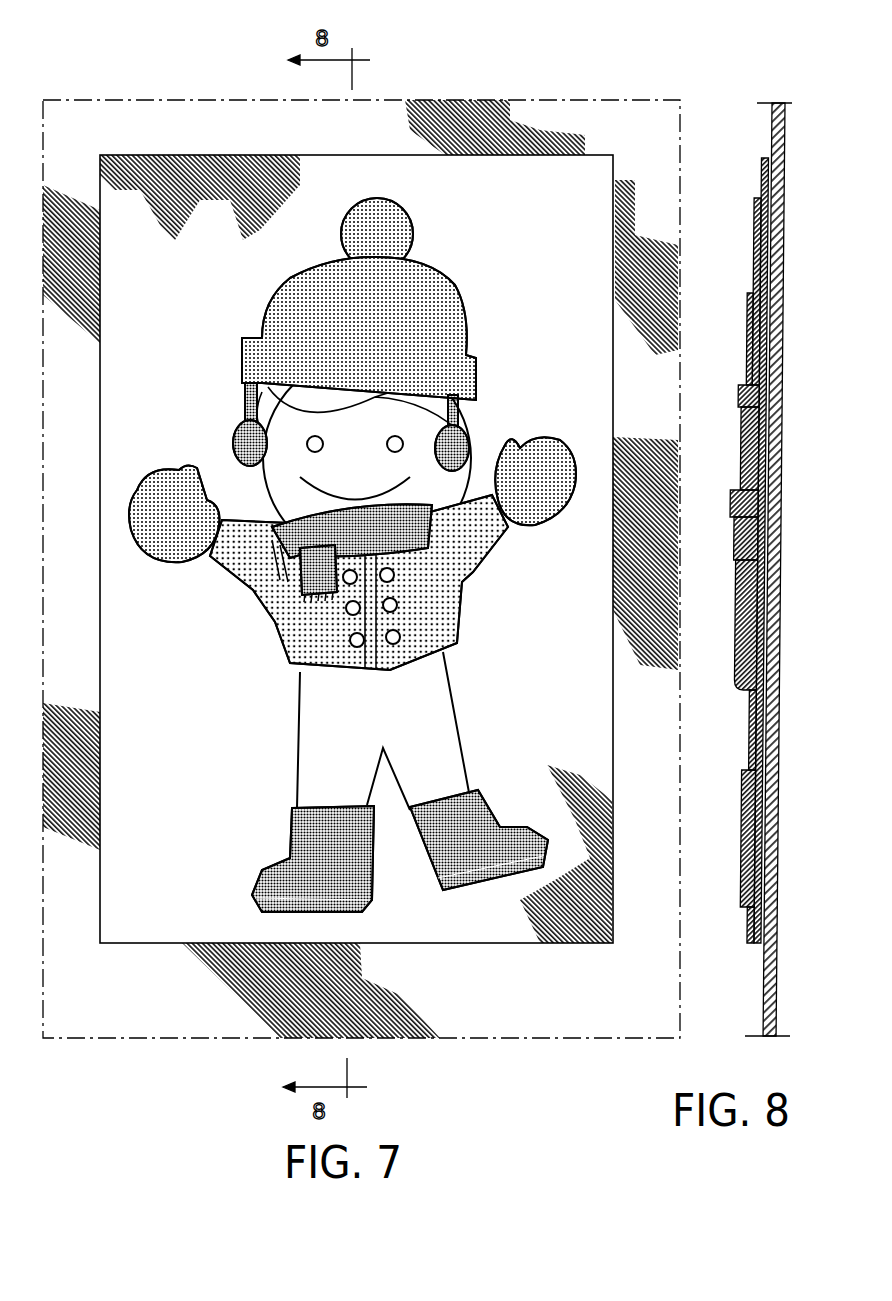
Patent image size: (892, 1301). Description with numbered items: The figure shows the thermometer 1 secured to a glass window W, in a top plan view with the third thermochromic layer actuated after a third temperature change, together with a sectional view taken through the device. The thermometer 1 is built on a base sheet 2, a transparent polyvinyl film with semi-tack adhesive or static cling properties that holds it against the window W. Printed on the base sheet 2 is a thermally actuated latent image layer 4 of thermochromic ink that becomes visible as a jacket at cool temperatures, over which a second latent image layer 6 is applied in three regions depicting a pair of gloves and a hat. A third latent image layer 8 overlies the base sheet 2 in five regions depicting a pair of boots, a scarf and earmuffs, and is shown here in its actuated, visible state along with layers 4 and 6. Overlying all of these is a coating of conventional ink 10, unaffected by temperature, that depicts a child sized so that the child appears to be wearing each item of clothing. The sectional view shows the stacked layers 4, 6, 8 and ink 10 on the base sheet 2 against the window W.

In FIG. 7, the decorative display assembly 1 is at (94, 66).
In FIG. 8, the decorative display assembly 1 is at (725, 70).
In FIG. 7, the base sheet 2 is at (513, 192).
In FIG. 8, the base sheet 2 is at (763, 159).
In FIG. 7, the thermally actuated latent image layer 4 is at (272, 612).
In FIG. 8, the thermally actuated latent image layer 4 is at (747, 643).
In FIG. 7, the second thermally actuated latent image layer 6 is at (452, 290).
In FIG. 8, the second thermally actuated latent image layer 6 is at (752, 245).
In FIG. 7, the third thermally actuated latent image layer 8 is at (232, 448).
In FIG. 8, the third thermally actuated latent image layer 8 is at (741, 400).
In FIG. 7, the coating of conventional ink 10 is at (470, 690).
In FIG. 8, the coating of conventional ink 10 is at (746, 853).
In FIG. 7, the window W is at (195, 102).
In FIG. 8, the window W is at (767, 1010).